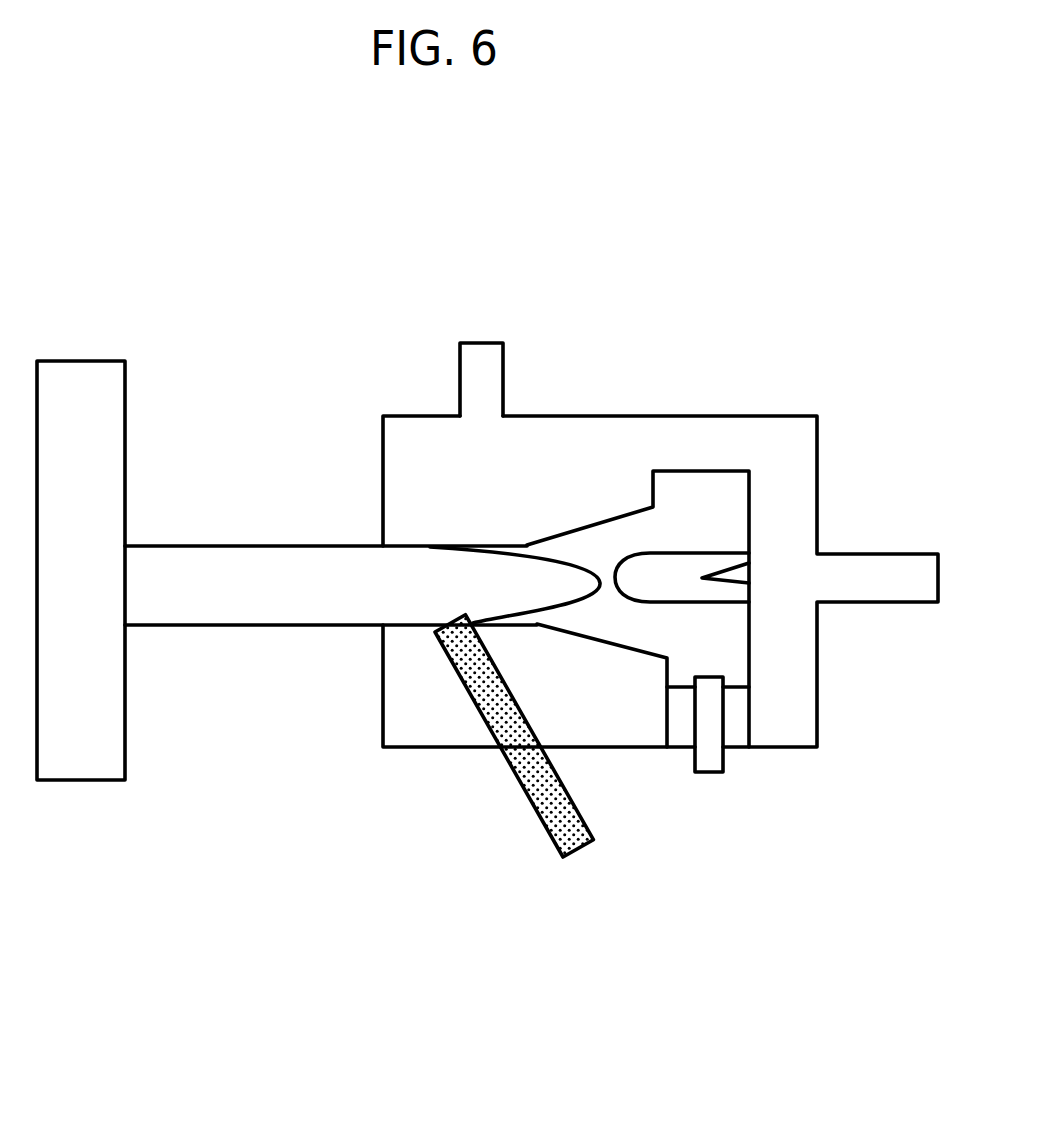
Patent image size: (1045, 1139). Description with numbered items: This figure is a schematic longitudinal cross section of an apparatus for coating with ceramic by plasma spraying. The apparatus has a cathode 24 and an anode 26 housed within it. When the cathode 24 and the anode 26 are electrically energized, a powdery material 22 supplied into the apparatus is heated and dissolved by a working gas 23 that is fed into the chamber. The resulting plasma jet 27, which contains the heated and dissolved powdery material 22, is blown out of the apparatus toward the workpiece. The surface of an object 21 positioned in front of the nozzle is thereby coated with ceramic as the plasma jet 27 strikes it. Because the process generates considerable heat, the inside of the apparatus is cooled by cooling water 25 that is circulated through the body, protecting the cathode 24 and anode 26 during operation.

The object 21 is at (124, 361).
The powdery material 22 is at (568, 862).
The working gas 23 is at (705, 772).
The cathode 24 is at (703, 607).
The cooling water 25 is at (503, 357).
The anode 26 is at (383, 470).
The plasma jet 27 is at (211, 626).